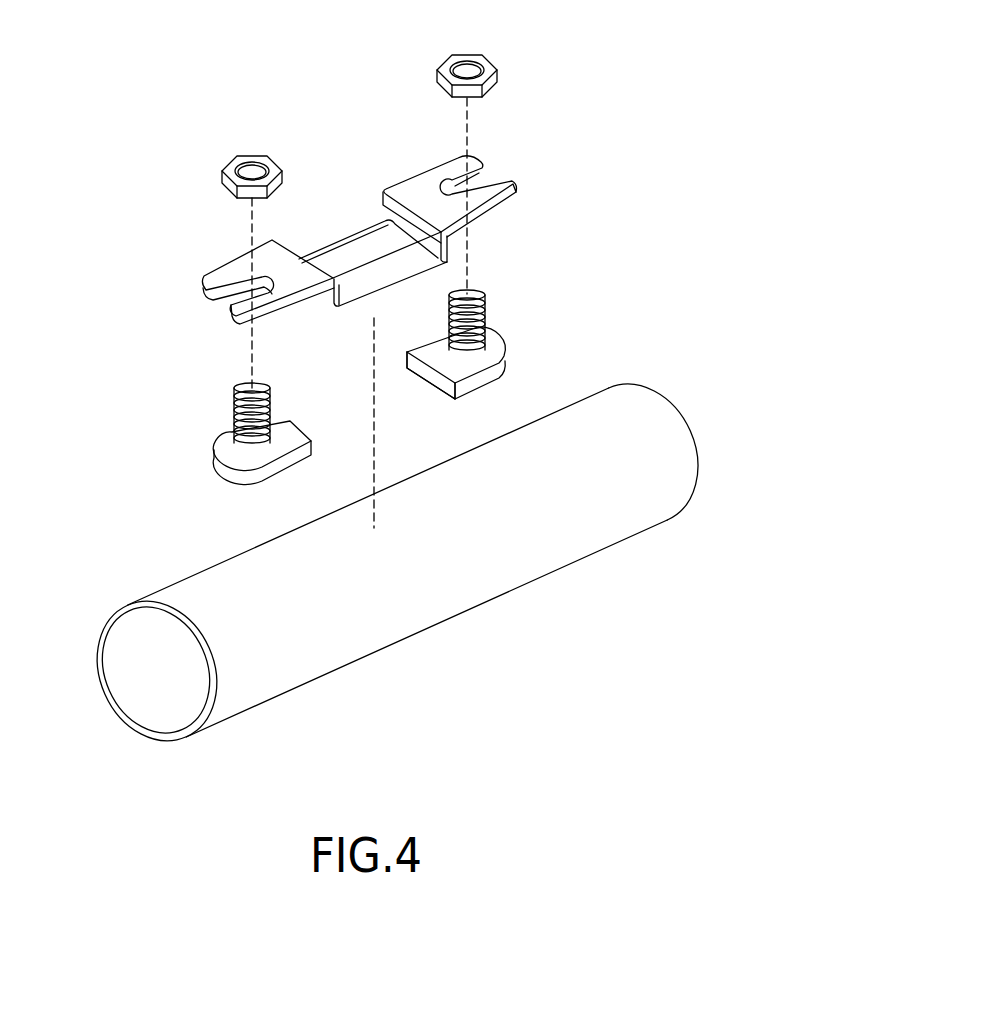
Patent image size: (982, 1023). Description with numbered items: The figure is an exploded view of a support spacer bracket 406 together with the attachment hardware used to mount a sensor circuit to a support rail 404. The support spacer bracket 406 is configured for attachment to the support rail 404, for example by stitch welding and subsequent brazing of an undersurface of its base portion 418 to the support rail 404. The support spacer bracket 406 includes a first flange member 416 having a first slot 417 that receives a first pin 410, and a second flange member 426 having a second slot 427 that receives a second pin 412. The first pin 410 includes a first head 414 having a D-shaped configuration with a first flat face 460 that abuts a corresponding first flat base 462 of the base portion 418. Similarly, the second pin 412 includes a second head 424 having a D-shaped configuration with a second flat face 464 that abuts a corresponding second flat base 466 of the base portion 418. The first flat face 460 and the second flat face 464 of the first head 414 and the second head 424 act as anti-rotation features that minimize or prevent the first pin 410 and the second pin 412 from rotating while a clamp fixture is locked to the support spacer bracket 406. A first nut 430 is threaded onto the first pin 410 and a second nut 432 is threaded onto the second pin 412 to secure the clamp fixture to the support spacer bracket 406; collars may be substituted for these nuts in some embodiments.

The support rail 404 is at (487, 577).
The support spacer bracket 406 is at (348, 255).
The first pin 410 is at (236, 406).
The second pin 412 is at (485, 303).
The first head 414 is at (254, 463).
The first flange member 416 is at (213, 268).
The first slot 417 is at (190, 312).
The base portion 418 is at (352, 318).
The second head 424 is at (479, 387).
The second flange member 426 is at (498, 195).
The second slot 427 is at (508, 162).
The first nut 430 is at (230, 153).
The second nut 432 is at (490, 57).
The first flat face 460 is at (292, 427).
The first flat base 462 is at (307, 303).
The second flat face 464 is at (423, 387).
The second flat base 466 is at (457, 253).